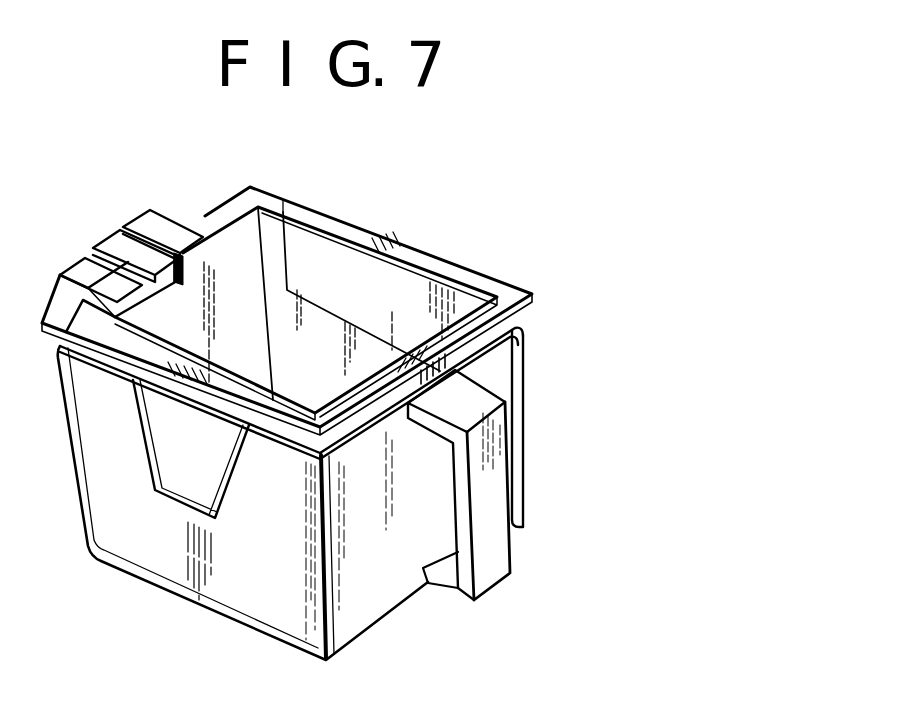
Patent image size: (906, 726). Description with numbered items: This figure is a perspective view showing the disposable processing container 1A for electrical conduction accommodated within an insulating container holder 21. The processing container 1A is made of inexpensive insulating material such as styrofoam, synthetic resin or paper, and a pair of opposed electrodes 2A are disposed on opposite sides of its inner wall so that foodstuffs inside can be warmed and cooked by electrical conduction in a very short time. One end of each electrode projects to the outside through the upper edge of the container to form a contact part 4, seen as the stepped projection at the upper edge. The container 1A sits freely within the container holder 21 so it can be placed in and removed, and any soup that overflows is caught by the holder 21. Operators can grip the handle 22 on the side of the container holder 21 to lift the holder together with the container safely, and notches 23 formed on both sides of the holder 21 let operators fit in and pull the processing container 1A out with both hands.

The processing container 1A is at (441, 252).
The electrode 2A is at (318, 317).
The contact part 4 is at (104, 231).
The container holder 21 is at (523, 366).
The handle 22 is at (496, 553).
The notch 23 is at (192, 492).